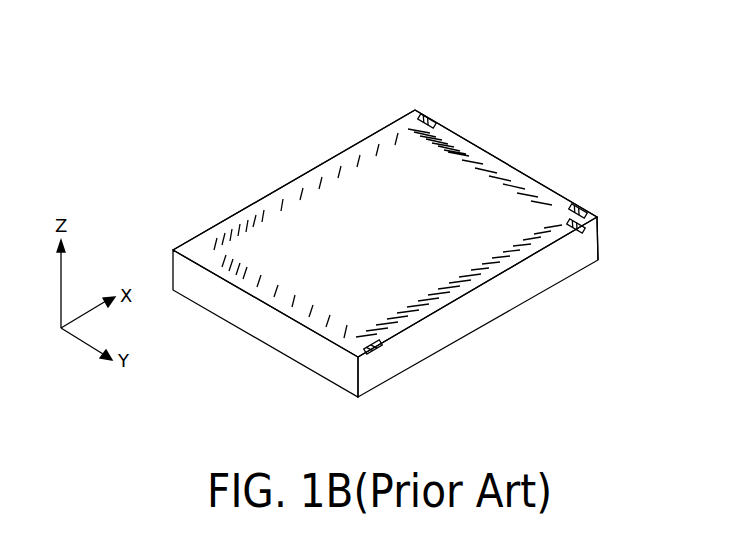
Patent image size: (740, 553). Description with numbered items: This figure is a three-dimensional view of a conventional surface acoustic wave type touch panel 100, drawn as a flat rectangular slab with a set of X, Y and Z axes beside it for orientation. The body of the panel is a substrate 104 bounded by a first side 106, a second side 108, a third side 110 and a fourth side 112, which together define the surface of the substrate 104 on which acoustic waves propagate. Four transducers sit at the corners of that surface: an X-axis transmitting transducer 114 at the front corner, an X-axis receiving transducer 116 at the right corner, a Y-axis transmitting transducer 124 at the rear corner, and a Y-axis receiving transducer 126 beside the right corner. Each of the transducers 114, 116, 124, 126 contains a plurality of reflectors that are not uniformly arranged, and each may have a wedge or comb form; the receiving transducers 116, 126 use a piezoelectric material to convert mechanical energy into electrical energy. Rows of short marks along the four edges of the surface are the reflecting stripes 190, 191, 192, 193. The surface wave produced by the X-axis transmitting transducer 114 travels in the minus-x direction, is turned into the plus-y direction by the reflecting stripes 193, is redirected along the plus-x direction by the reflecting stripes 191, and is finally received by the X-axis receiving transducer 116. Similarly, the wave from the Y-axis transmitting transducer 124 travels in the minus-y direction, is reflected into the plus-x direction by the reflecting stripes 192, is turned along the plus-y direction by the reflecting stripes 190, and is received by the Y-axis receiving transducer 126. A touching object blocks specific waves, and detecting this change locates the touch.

The SAW type touch panel 100 is at (424, 239).
The substrate 104 is at (385, 199).
The first side 106 is at (508, 163).
The second side 108 is at (267, 192).
The third side 110 is at (258, 323).
The fourth side 112 is at (483, 311).
The X-axis transmitting transducer 114 is at (385, 352).
The X-axis receiving transducer 116 is at (598, 222).
The Y-axis transmitting transducer 124 is at (428, 120).
The Y-axis receiving transducer 126 is at (577, 204).
The reflecting stripes 190 is at (459, 281).
The reflecting stripes 191 is at (480, 167).
The reflecting stripes 192 is at (306, 191).
The reflecting stripes 193 is at (284, 296).